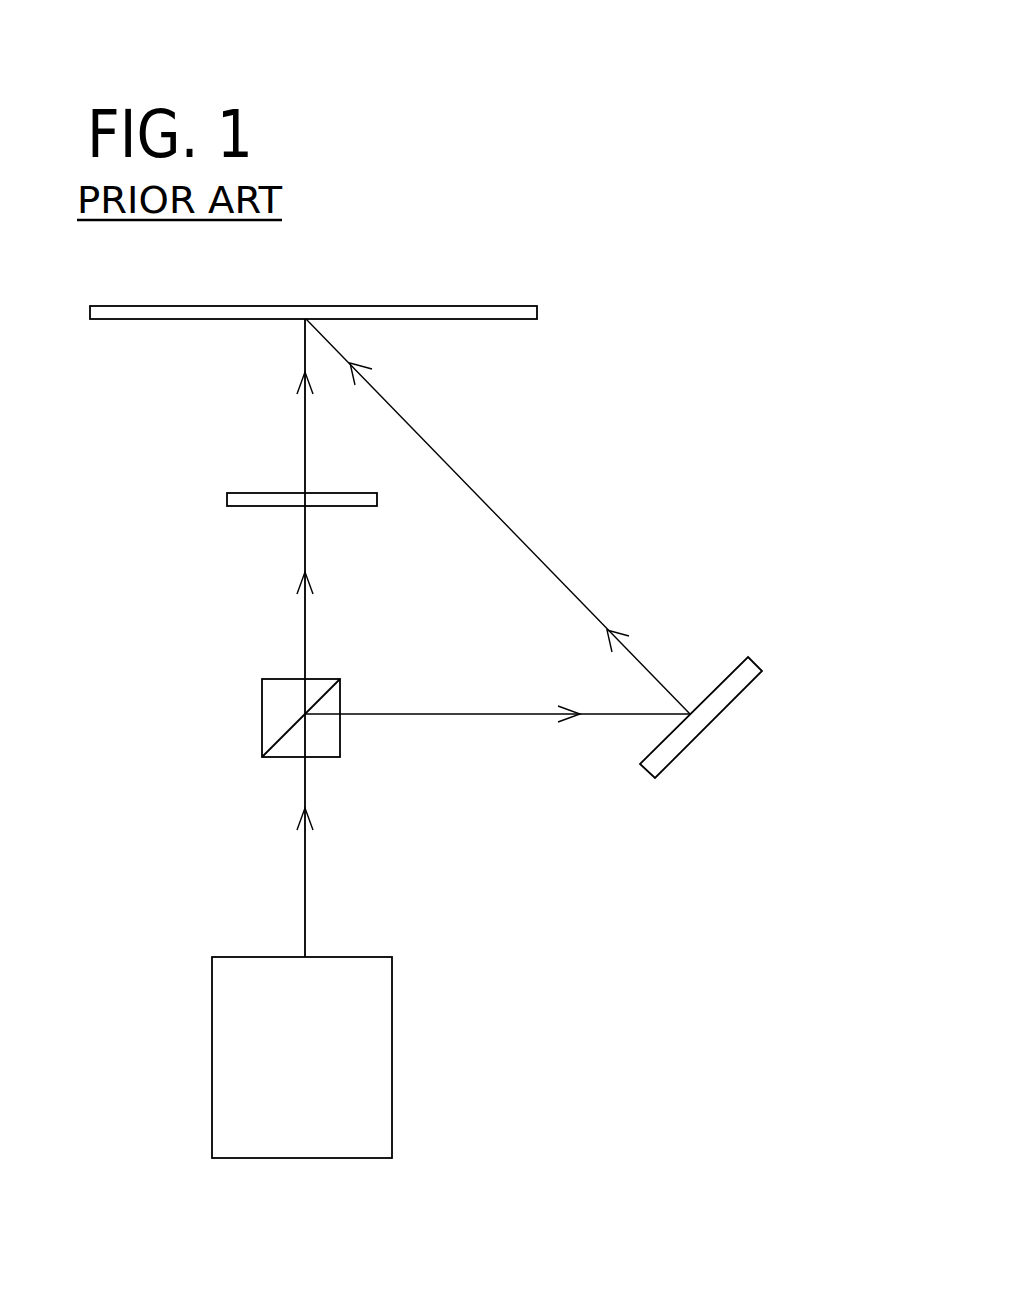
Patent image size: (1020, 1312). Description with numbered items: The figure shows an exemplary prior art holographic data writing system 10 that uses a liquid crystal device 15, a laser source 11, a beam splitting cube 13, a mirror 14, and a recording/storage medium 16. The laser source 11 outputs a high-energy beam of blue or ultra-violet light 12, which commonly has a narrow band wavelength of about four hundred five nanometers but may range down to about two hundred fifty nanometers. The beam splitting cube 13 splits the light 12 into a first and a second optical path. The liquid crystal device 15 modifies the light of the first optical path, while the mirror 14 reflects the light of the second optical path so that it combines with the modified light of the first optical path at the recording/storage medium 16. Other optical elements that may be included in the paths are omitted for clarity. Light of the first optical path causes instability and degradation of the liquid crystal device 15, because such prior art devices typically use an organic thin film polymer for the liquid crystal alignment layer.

The holographic data writing system 10 is at (440, 153).
The laser source 11 is at (392, 1085).
The light 12 is at (305, 885).
The beam splitting cube 13 is at (262, 718).
The mirror 14 is at (762, 671).
The liquid crystal device 15 is at (227, 493).
The recording/storage medium 16 is at (537, 307).